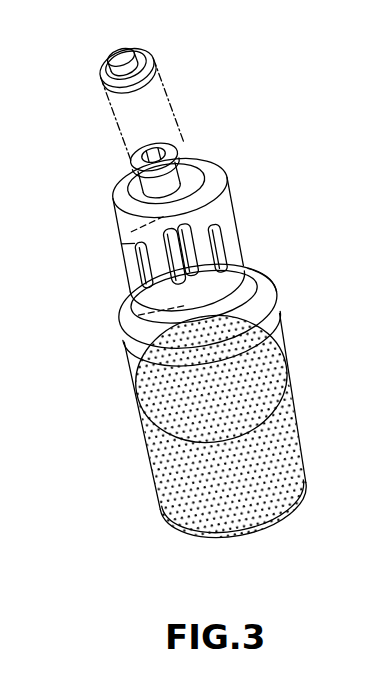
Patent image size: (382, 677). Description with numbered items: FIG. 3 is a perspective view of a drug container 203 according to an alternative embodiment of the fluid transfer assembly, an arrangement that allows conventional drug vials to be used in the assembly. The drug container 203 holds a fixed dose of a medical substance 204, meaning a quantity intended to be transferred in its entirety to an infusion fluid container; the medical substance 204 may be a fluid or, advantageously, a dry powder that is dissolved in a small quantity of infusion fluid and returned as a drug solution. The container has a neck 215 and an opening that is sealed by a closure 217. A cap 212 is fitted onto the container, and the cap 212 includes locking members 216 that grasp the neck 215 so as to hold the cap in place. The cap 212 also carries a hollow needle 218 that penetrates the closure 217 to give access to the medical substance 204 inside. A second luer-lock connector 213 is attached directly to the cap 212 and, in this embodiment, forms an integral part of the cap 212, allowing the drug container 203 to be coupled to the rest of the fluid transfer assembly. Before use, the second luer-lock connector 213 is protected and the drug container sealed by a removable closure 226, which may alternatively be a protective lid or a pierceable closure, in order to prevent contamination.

The drug container 203 is at (302, 337).
The medical substance 204 is at (178, 474).
The cap 212 is at (236, 177).
The second luer-lock connector 213 is at (157, 142).
The neck 215 is at (244, 288).
The locking members 216 is at (237, 255).
The closure 217 is at (129, 235).
The hollow needle 218 is at (132, 316).
The removable closure 226 is at (108, 68).